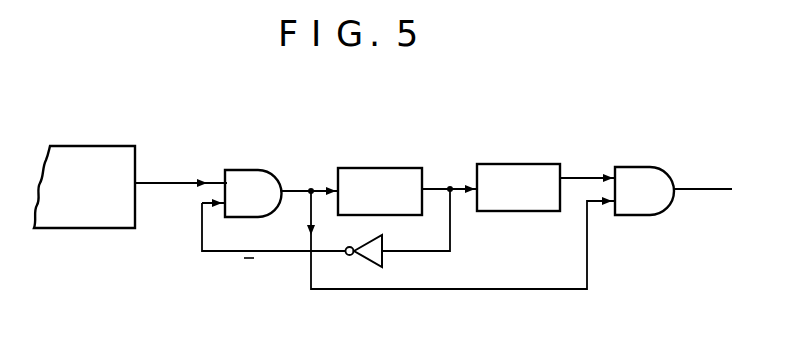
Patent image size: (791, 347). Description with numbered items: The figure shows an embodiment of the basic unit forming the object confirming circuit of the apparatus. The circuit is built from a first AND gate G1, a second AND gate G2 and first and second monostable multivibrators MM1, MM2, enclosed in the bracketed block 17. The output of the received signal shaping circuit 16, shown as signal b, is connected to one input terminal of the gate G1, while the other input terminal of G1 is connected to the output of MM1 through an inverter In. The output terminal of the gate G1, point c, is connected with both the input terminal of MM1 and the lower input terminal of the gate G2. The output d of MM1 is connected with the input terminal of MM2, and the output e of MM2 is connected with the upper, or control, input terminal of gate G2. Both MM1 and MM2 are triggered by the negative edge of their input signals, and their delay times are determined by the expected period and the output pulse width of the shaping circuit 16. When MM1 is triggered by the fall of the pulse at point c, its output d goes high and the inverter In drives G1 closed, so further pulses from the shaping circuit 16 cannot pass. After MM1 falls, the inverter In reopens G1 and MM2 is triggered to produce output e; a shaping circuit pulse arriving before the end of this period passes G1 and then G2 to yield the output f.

The received signal shaping circuit 16 is at (89, 146).
The pulse shaping circuit 17 is at (673, 138).
The shaping circuit output signal b is at (181, 173).
The gate G1 output point c is at (310, 177).
The MM1 output d is at (449, 176).
The MM2 output e is at (587, 170).
The output signal f is at (702, 177).
The first AND gate G1 is at (253, 193).
The second AND gate G2 is at (644, 191).
The first monostable multivibrator MM1 is at (380, 180).
The second monostable multivibrator MM2 is at (518, 177).
The inverter In is at (385, 241).